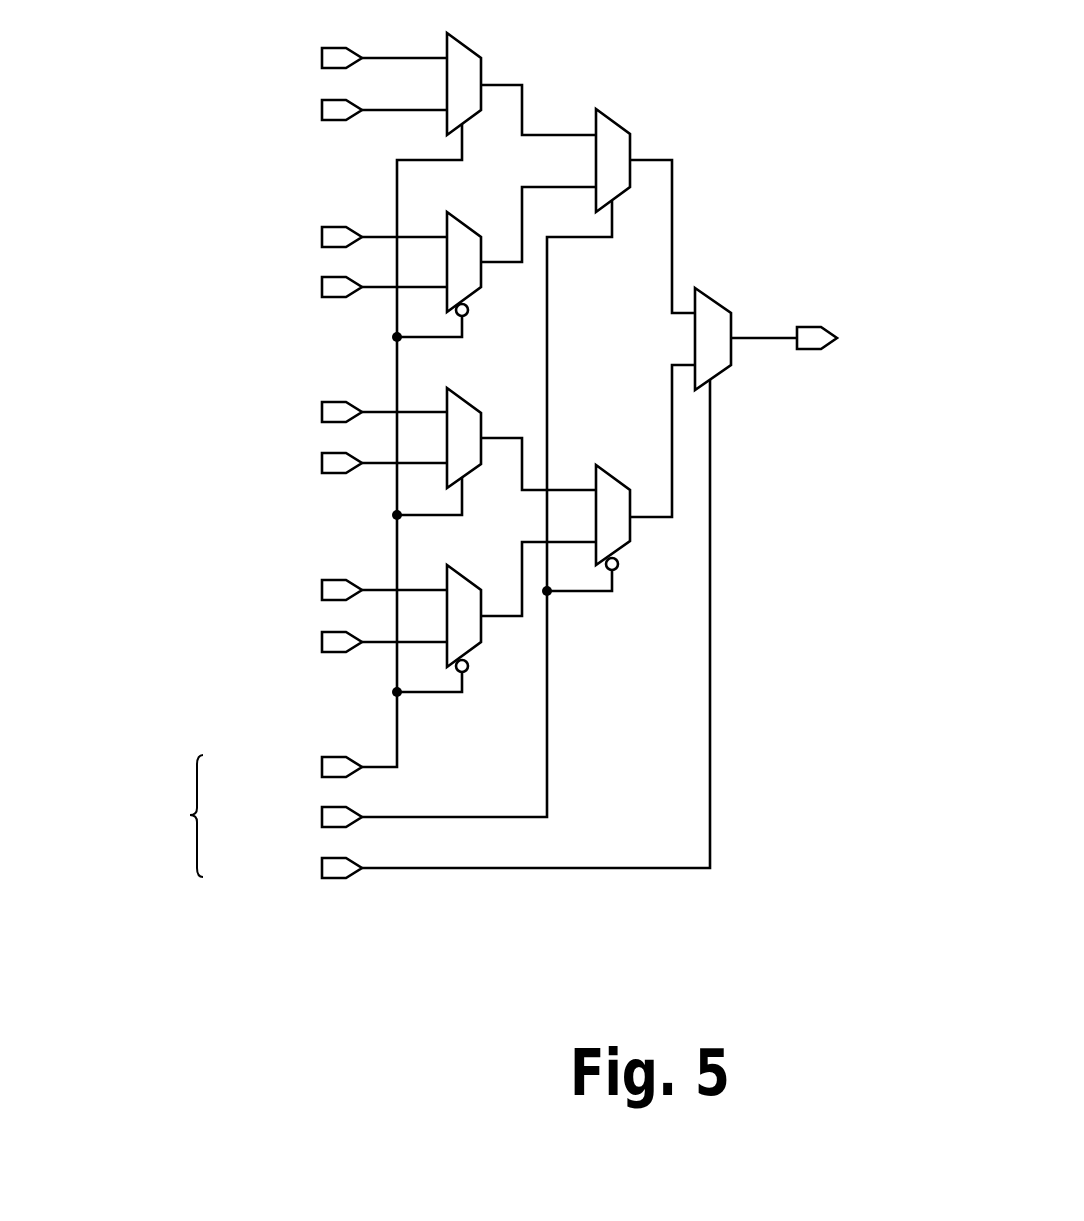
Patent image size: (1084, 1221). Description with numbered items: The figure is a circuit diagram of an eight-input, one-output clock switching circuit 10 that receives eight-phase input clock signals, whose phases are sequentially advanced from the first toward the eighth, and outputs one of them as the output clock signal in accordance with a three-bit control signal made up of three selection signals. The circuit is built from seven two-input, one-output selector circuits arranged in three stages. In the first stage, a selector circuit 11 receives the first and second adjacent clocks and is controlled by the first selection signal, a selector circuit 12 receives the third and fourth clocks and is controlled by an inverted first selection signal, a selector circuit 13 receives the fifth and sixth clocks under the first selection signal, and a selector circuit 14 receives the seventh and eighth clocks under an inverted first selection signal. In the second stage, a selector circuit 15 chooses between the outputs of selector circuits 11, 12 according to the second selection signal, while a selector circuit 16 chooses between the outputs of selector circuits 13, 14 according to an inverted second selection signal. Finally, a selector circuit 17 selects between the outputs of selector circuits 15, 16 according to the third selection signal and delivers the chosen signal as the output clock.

The clock switching circuit 10 is at (843, 127).
The selector circuit 11 is at (463, 46).
The selector circuit 12 is at (463, 222).
The selector circuit 13 is at (463, 399).
The selector circuit 14 is at (463, 578).
The selector circuit 15 is at (612, 122).
The selector circuit 16 is at (612, 478).
The selector circuit 17 is at (713, 300).